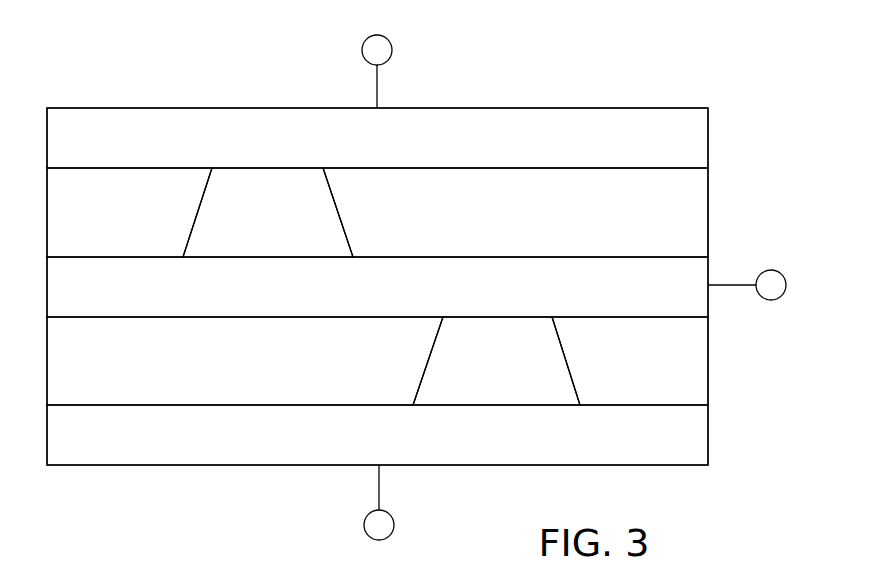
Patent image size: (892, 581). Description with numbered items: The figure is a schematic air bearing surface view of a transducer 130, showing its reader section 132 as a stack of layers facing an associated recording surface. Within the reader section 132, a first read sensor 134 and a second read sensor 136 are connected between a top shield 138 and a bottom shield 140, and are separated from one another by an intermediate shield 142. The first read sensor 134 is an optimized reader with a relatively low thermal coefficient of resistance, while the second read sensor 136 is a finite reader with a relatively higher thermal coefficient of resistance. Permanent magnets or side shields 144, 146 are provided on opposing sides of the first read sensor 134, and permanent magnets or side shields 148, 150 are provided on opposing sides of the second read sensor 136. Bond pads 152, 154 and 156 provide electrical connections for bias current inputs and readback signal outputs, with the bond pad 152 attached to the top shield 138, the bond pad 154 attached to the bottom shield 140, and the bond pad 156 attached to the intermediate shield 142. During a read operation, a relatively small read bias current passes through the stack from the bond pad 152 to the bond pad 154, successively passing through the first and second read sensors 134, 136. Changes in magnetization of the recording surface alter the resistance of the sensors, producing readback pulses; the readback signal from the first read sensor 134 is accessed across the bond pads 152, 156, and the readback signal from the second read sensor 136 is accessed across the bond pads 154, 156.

The transducer 130 is at (134, 36).
The reader section 132 is at (583, 122).
The first read sensor 134 is at (250, 246).
The second read sensor 136 is at (481, 392).
The top shield 138 is at (361, 160).
The bottom shield 140 is at (361, 457).
The intermediate shield 142 is at (361, 309).
The permanent magnet or side shield 144 is at (96, 236).
The permanent magnet or side shield 146 is at (481, 231).
The permanent magnet or side shield 148 is at (250, 386).
The permanent magnet or side shield 150 is at (618, 377).
The bond pad 152 is at (387, 37).
The bond pad 154 is at (389, 513).
The bond pad 156 is at (779, 272).